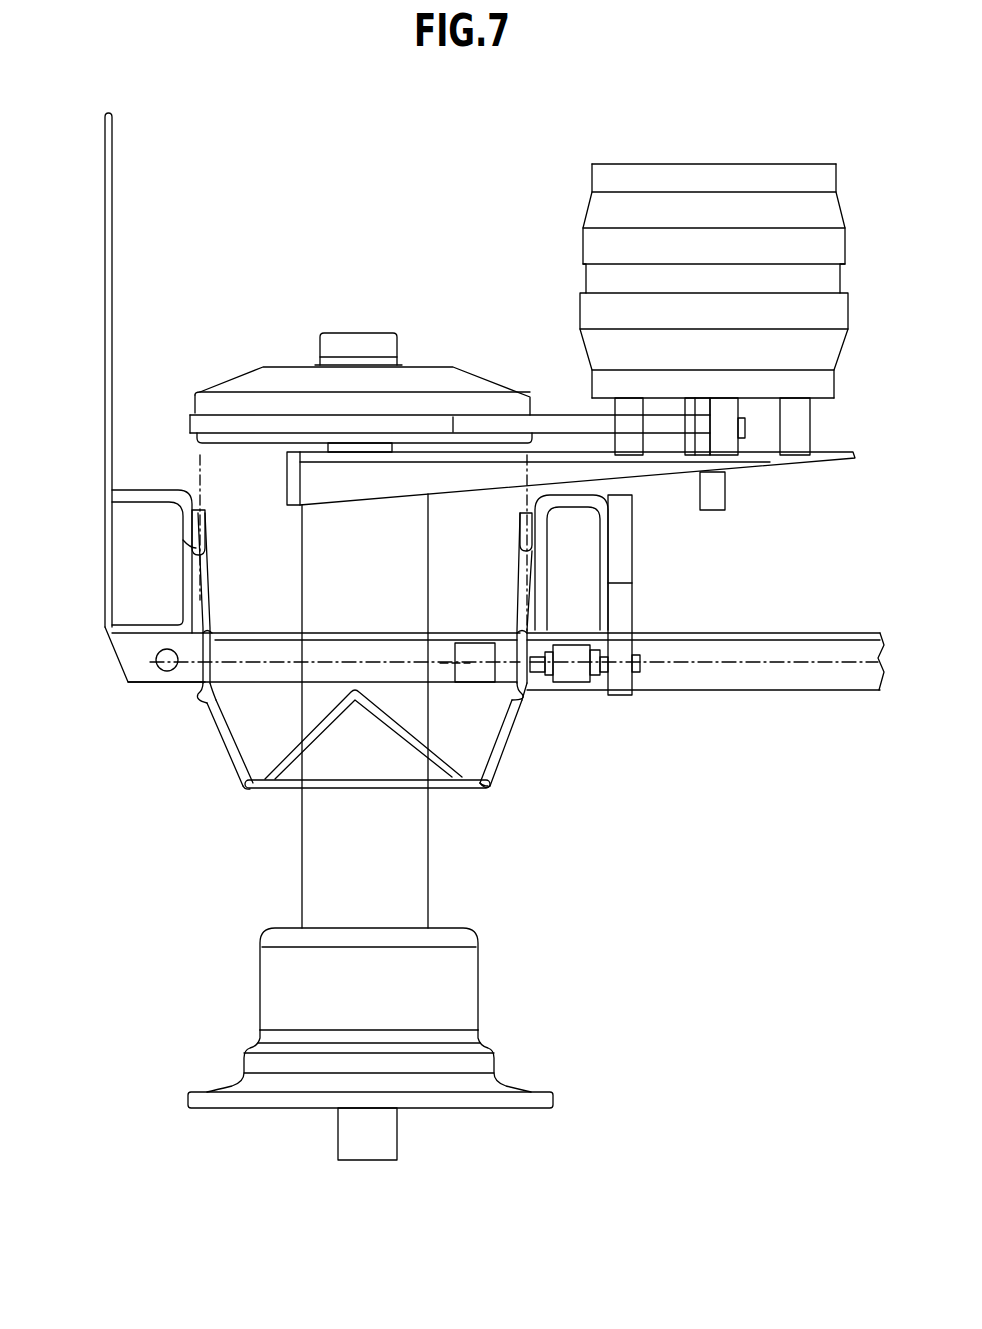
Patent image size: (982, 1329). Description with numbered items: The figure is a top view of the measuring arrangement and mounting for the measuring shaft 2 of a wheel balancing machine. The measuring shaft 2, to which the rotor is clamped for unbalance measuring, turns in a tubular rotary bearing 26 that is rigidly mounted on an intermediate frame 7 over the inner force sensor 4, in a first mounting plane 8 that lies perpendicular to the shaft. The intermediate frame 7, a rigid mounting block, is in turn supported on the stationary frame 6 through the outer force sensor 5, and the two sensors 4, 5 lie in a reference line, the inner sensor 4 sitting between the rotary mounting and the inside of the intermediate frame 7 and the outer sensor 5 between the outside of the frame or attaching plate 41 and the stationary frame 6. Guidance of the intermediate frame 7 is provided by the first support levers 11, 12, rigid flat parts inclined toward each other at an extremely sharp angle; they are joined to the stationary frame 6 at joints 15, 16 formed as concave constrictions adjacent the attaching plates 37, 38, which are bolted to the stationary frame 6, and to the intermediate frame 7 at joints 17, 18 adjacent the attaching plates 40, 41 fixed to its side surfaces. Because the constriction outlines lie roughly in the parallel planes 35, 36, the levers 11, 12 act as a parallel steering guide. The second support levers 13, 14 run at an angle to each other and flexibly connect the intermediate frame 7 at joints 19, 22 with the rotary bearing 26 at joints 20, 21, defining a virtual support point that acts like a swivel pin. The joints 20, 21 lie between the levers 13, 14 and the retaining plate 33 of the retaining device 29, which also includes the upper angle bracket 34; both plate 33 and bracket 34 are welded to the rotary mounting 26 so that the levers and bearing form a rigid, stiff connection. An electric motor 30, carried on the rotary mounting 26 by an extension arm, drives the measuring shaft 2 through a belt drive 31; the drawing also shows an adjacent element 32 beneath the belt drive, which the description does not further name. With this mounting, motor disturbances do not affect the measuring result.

The measuring shaft 2 is at (375, 1143).
The inner force sensor 4 is at (485, 690).
The outer force sensor 5 is at (570, 688).
The stationary frame 6 is at (186, 562).
The intermediate frame 7 is at (265, 657).
The first mounting plane 8 is at (715, 673).
The first support lever 11 is at (560, 613).
The first support lever 12 is at (200, 587).
The second support lever 13 is at (498, 755).
The second support lever 14 is at (232, 745).
The joint 15 is at (520, 548).
The joint 16 is at (196, 550).
The joint 17 is at (518, 632).
The joint 18 is at (218, 635).
The joint 19 is at (520, 720).
The joint 20 is at (485, 790).
The joint 21 is at (245, 790).
The joint 22 is at (200, 705).
The tubular rotary bearing 26 is at (372, 733).
The retaining device 29 is at (283, 806).
The electric motor 30 is at (605, 243).
The belt drive 31 is at (500, 425).
The support plate 32 is at (448, 478).
The retaining plate 33 is at (355, 788).
The angle bracket 34 is at (320, 728).
The parallel plane 35 is at (207, 490).
The parallel plane 36 is at (540, 458).
The attaching plate 37 is at (200, 537).
The attaching plate 38 is at (525, 530).
The attaching plate 40 is at (200, 672).
The attaching plate 41 is at (533, 692).